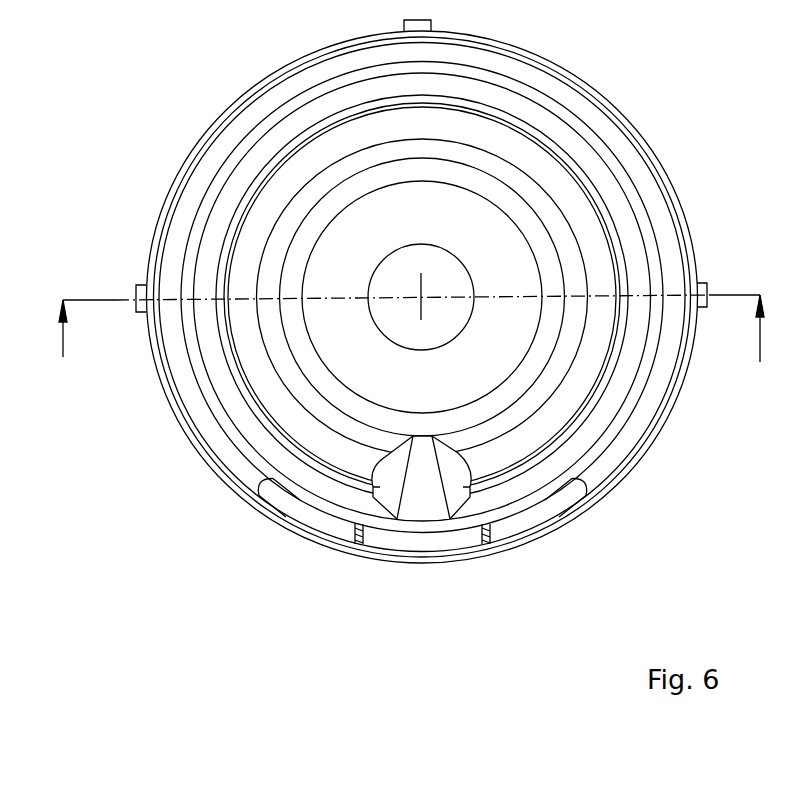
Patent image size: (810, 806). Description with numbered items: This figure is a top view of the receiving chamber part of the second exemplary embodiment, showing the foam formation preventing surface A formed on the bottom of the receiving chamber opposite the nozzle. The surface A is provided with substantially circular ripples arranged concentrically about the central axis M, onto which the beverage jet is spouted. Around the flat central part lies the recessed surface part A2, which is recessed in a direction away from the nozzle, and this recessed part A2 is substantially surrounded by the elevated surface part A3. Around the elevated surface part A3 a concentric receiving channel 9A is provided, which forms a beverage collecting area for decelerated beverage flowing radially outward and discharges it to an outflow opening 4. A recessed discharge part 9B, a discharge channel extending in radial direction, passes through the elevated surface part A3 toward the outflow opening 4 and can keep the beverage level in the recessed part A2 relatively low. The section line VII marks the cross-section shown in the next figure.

The central axis M is at (421, 297).
The foam formation preventing surface A is at (486, 372).
The recessed surface part A2 is at (547, 403).
The elevated surface part A3 is at (598, 392).
The receiving channel 9A is at (248, 425).
The recessed discharge part 9B is at (423, 490).
The outflow opening 4 is at (450, 542).
The section line VII is at (415, 331).